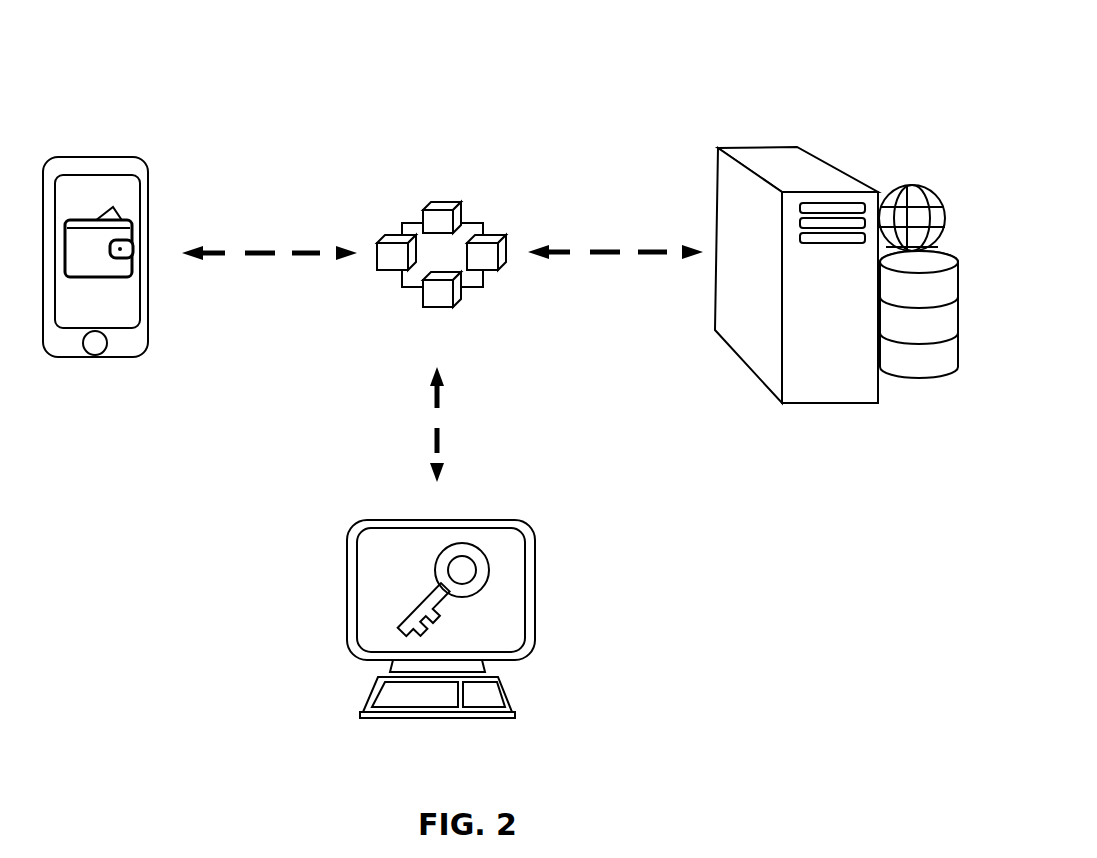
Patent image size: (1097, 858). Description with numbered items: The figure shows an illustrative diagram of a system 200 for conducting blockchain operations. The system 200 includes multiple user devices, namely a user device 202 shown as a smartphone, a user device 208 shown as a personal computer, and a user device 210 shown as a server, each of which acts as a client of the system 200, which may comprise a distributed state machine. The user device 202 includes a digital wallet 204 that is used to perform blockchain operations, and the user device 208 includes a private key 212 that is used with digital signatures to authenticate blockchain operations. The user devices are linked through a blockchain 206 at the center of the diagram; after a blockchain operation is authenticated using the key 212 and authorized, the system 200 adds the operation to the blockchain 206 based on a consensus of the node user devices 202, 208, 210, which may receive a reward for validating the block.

The system 200 is at (463, 82).
The user device 202 is at (99, 390).
The digital wallet 204 is at (128, 199).
The blockchain 206 is at (481, 322).
The user device 208 is at (548, 602).
The user device 210 is at (800, 132).
The key 212 is at (413, 556).